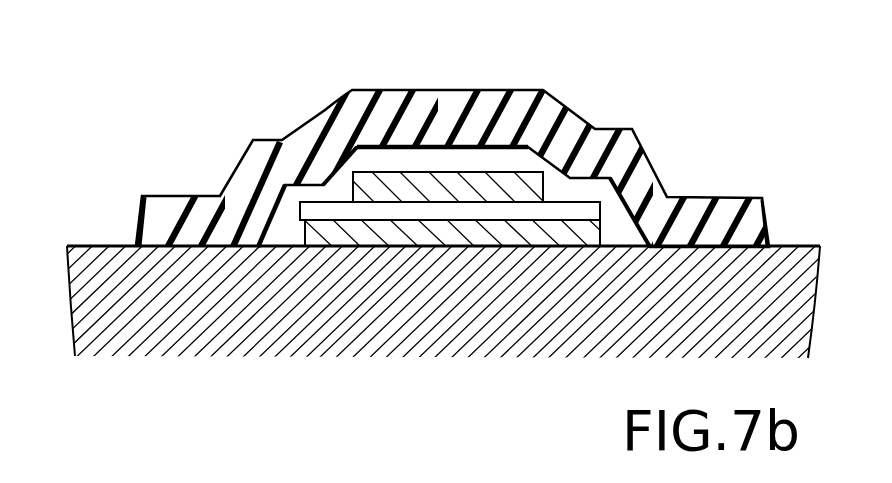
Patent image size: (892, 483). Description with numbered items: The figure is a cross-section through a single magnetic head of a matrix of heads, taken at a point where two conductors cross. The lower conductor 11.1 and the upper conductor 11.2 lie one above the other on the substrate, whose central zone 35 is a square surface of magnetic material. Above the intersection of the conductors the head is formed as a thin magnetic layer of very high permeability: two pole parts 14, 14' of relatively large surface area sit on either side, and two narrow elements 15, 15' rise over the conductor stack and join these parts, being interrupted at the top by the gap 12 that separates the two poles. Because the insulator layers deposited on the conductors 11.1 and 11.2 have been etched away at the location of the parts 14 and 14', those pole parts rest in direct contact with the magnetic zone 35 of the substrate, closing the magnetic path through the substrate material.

The central part of the substrate plate 35 is at (793, 308).
The gap 12 is at (442, 142).
The part of magnetic pole 14 is at (184, 189).
The part of magnetic pole 14' is at (739, 185).
The narrow element 15 is at (357, 143).
The narrow element 15' is at (567, 143).
The conductor 11.1 is at (560, 228).
The conductor 11.2 is at (510, 183).